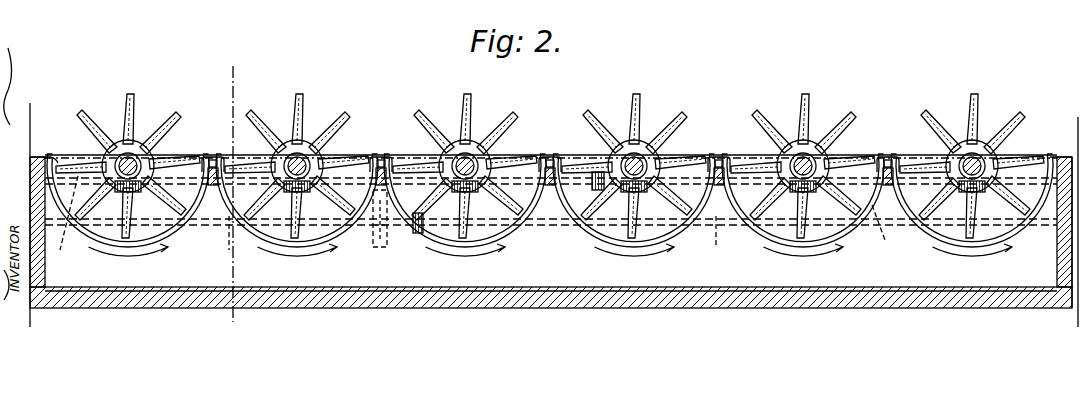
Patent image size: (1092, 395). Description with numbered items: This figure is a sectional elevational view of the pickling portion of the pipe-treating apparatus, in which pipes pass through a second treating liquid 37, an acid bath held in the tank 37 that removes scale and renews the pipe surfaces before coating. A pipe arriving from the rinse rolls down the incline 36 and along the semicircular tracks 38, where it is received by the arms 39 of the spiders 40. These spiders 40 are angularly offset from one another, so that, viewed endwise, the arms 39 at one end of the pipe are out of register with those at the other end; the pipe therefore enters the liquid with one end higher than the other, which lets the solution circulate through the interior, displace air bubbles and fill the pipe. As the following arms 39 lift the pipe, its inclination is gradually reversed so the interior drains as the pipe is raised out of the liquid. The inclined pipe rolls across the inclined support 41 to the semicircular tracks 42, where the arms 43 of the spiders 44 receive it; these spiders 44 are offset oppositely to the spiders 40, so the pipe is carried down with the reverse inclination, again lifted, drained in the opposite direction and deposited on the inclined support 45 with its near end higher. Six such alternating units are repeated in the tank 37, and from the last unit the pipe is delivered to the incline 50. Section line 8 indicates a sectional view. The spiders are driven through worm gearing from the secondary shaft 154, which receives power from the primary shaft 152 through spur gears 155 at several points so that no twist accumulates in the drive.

The section line 8- 8 is at (240, 199).
The incline 36 is at (38, 156).
The second treating liquid 37 is at (57, 158).
The semicircular tracks 38 is at (163, 228).
The arms 39 is at (178, 118).
The spiders 40 is at (148, 160).
The inclined support 41 is at (213, 156).
The semicircular tracks 42 is at (283, 232).
The arms 43 is at (318, 110).
The spiders 44 is at (311, 152).
The inclined support 45 is at (382, 157).
The incline 50 is at (1059, 158).
The primary shaft 152 is at (229, 218).
The secondary shaft 154 is at (478, 224).
The spur gears 155 is at (371, 240).